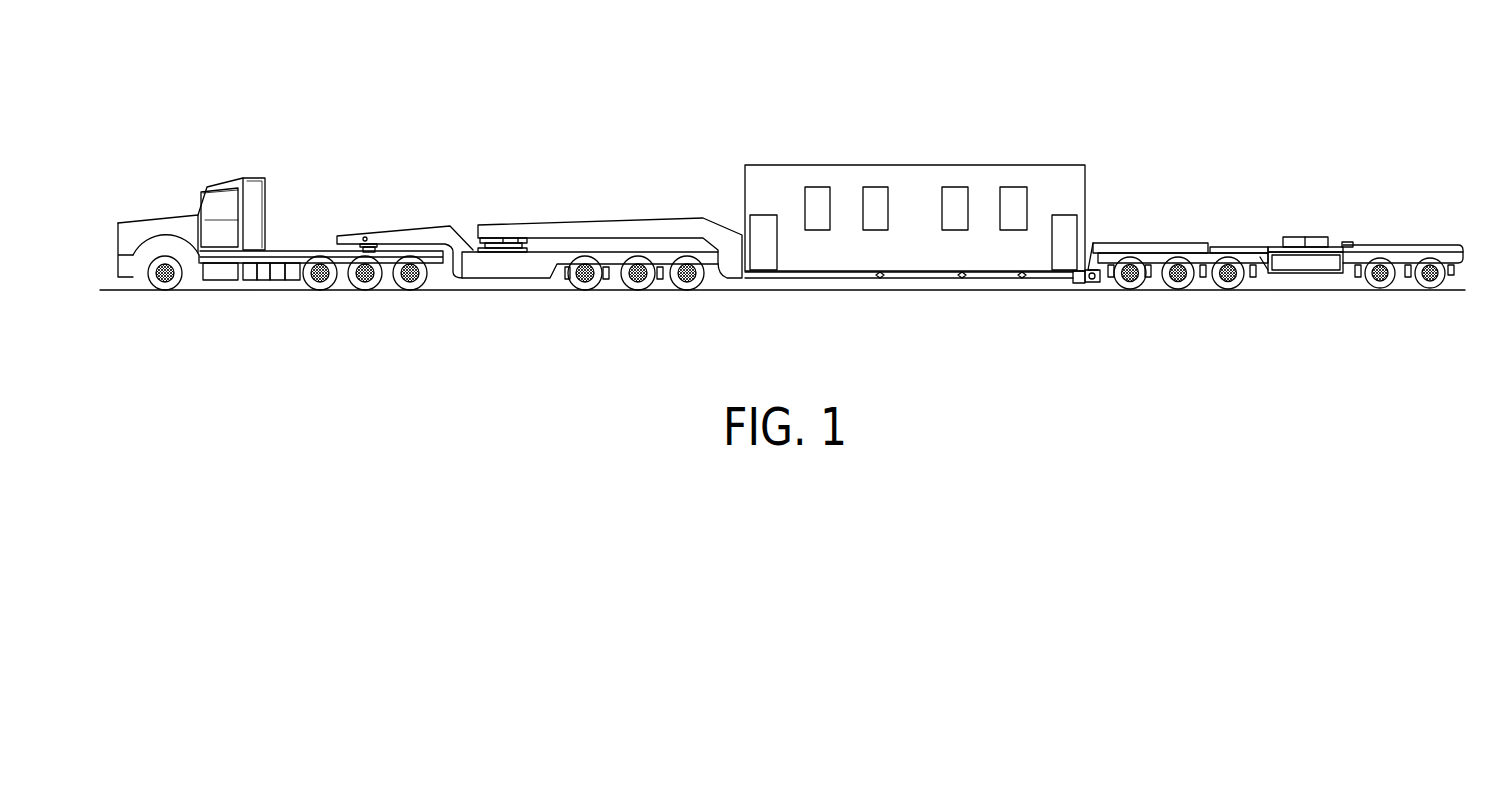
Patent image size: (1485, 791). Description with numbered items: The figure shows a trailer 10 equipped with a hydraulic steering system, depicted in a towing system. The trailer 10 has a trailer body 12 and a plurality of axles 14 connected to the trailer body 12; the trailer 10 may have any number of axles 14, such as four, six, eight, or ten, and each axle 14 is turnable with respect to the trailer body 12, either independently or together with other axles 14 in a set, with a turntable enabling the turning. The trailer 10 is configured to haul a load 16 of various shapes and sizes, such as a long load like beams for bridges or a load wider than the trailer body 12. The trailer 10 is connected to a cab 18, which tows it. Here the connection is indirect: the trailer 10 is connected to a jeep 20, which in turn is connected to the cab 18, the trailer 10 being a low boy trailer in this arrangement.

The transport system 10 is at (1066, 102).
The chassis 12 is at (993, 279).
The trailing dolly 14 is at (1182, 305).
The modular building unit 16 is at (915, 188).
The truck tractor 18 is at (231, 178).
The gooseneck trailer 20 is at (445, 238).